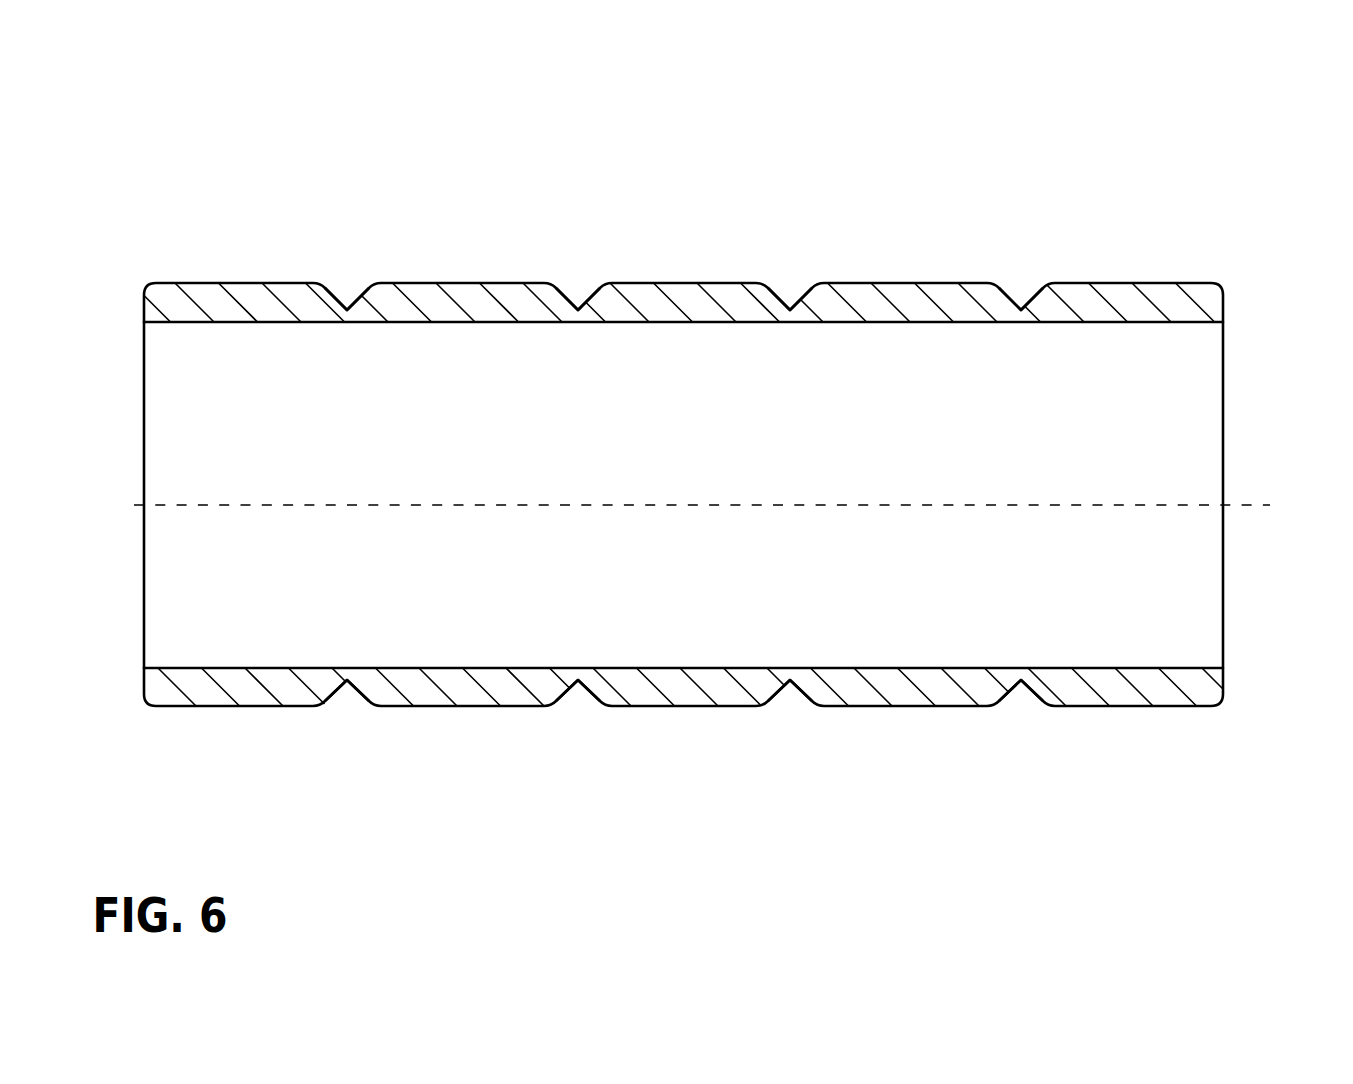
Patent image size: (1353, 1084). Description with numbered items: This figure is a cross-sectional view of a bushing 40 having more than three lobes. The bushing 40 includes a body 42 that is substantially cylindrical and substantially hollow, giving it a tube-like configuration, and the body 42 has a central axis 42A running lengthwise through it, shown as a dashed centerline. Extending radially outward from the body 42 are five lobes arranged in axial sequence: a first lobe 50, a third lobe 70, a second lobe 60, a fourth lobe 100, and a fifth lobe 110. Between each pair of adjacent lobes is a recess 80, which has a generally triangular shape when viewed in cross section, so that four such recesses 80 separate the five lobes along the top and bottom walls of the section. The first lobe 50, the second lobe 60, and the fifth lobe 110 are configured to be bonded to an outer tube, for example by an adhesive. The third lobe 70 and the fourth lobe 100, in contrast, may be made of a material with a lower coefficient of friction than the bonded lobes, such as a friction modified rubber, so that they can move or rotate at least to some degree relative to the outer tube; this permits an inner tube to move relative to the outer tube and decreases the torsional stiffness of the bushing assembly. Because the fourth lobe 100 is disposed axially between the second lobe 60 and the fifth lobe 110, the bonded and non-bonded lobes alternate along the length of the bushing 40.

The bushing 40 is at (1103, 167).
The body 42 is at (137, 310).
The central axis 42A is at (1242, 505).
The first lobe 50 is at (238, 297).
The third lobe 70 is at (463, 294).
The second lobe 60 is at (683, 297).
The fourth lobe 100 is at (898, 297).
The fifth lobe 110 is at (1125, 298).
The recess 80 is at (347, 283).